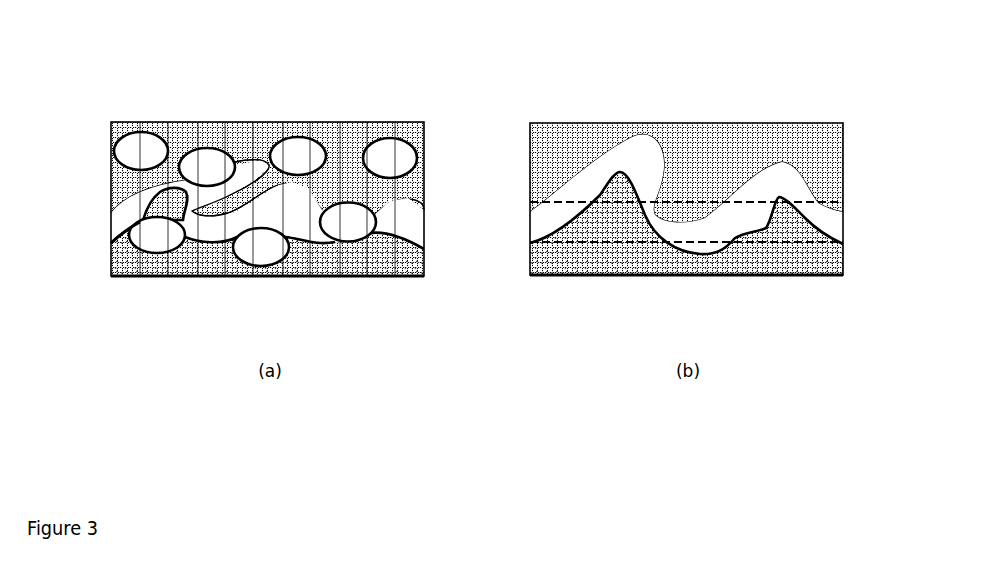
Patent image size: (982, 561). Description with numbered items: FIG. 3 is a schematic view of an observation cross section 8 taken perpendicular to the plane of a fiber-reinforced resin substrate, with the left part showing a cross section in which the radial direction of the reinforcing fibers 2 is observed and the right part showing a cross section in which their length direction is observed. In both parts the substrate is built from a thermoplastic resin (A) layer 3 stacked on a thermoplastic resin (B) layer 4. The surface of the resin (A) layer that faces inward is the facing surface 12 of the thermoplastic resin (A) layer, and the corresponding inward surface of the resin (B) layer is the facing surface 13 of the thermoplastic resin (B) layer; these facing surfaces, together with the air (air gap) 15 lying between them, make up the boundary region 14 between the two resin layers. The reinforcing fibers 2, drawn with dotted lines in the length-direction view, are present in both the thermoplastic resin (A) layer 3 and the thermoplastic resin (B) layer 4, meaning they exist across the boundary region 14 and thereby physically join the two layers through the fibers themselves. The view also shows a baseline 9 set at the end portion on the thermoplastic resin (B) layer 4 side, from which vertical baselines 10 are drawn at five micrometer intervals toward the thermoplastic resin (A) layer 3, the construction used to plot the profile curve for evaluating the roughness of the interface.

The reinforcing fiber 2 is at (368, 241).
The thermoplastic resin (A) layer 3 is at (412, 190).
The thermoplastic resin (B) layer 4 is at (424, 258).
The observation cross section 8 is at (382, 104).
The baseline 9 is at (118, 276).
The vertical baseline 10 is at (197, 137).
The facing surface of thermoplastic resin (A) layer 12 is at (266, 163).
The facing surface of thermoplastic resin (B) layer 13 is at (320, 245).
The boundary region 14 is at (433, 210).
The air (air gap) 15 is at (128, 222).